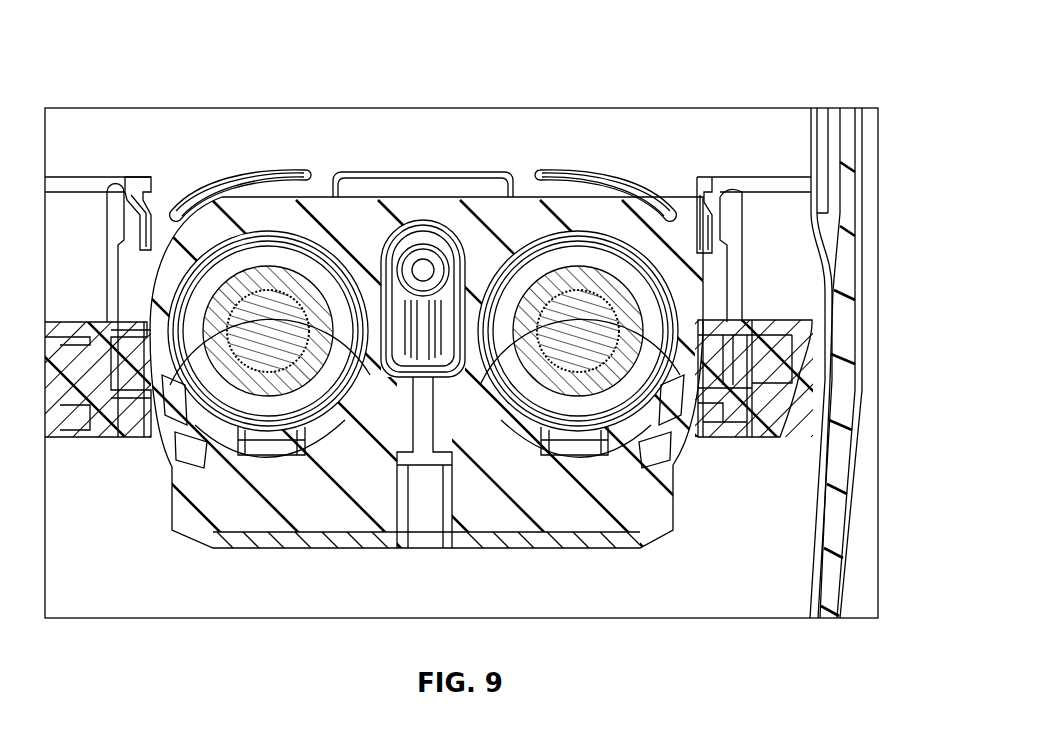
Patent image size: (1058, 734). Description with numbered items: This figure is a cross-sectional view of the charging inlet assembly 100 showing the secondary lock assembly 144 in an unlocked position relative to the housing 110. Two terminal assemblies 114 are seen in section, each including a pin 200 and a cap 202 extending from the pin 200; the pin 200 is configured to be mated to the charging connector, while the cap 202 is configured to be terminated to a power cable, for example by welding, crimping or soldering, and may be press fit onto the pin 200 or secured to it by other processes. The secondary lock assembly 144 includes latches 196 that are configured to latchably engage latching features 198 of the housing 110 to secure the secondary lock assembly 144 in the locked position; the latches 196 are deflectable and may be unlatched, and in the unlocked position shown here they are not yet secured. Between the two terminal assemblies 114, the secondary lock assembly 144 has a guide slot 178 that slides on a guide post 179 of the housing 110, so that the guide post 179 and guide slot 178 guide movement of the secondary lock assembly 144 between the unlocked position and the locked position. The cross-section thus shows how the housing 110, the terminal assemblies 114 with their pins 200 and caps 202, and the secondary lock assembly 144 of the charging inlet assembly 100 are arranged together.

The charging inlet assembly 100 is at (567, 104).
The housing 110 is at (528, 212).
The terminal assembly 114 is at (648, 303).
The secondary lock assembly 144 is at (582, 540).
The guide slot 178 is at (446, 302).
The guide post 179 is at (423, 268).
The latch 196 is at (115, 220).
The latching feature 198 is at (137, 185).
The pin 200 is at (268, 310).
The cap 202 is at (240, 283).